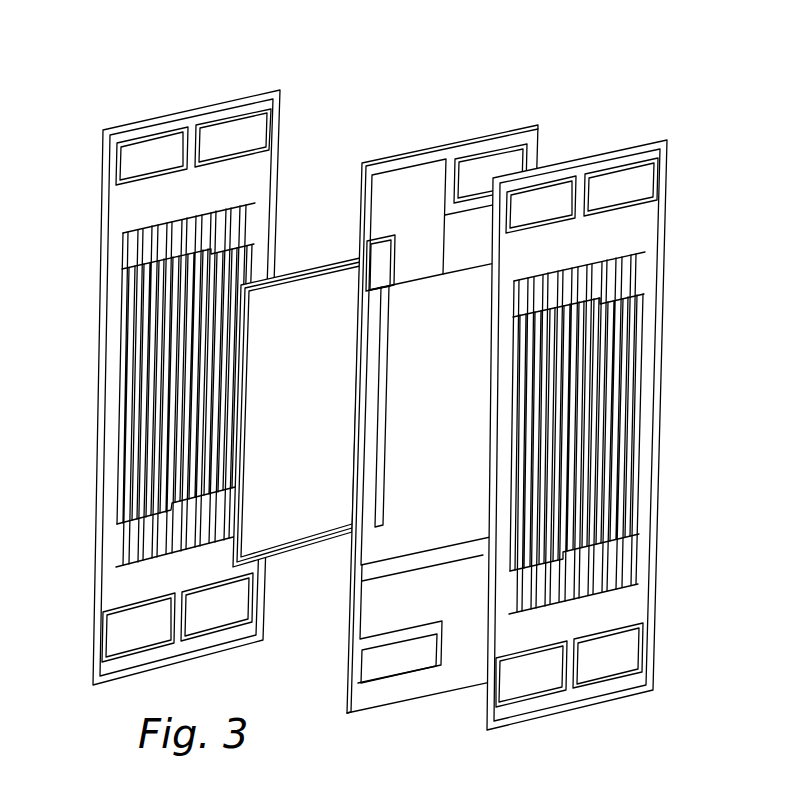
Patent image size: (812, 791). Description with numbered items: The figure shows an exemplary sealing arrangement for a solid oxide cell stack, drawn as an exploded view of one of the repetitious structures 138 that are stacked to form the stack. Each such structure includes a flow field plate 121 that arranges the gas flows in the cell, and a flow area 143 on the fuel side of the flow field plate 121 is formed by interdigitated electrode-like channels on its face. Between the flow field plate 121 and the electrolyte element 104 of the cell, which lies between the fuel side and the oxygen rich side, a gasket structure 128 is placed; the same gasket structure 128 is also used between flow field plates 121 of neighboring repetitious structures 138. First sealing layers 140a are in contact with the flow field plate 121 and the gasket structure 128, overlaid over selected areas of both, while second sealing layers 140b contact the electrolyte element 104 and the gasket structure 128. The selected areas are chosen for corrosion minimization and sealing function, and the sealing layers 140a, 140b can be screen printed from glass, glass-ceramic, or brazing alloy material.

The electrolyte element 104 is at (307, 299).
The second sealing layers 140b is at (330, 257).
The gasket structure 128 is at (410, 162).
The first sealing layers 140a is at (563, 168).
The flow field plate 121 is at (607, 397).
The flow area 143 is at (643, 257).
The repetitious structures 138 is at (444, 381).